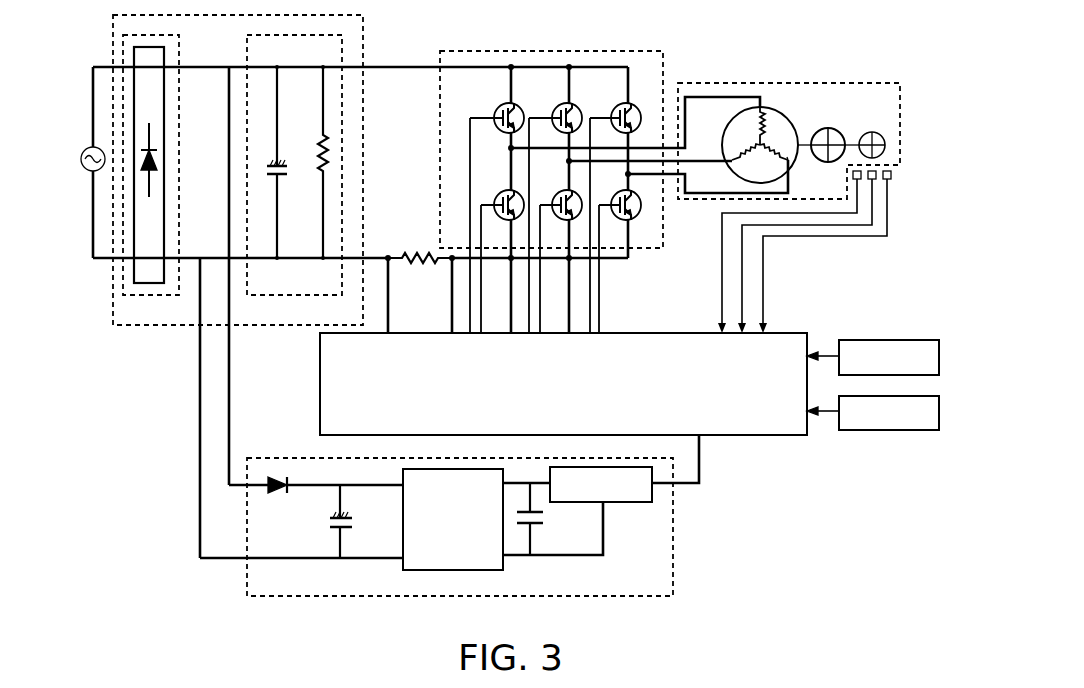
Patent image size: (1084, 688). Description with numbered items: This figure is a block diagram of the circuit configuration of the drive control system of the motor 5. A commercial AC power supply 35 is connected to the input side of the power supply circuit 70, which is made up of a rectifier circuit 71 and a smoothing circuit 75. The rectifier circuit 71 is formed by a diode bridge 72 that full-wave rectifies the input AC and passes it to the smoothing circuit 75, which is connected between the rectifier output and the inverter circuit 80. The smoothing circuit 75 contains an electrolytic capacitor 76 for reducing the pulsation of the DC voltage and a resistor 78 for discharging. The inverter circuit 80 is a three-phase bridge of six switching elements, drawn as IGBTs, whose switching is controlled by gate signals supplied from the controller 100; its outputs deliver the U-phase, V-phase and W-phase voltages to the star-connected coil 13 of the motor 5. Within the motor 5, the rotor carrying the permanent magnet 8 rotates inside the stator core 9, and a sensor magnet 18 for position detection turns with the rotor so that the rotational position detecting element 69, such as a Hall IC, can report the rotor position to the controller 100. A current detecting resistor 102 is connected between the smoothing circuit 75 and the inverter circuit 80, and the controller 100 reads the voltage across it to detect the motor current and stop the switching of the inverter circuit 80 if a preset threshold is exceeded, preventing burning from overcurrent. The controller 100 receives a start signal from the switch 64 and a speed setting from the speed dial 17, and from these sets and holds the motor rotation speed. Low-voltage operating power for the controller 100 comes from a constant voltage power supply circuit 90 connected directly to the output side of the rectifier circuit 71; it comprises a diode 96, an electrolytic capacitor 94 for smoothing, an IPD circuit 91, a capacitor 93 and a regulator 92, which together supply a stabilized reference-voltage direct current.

The commercial AC power supply 35 is at (88, 172).
The power supply circuit 70 is at (132, 326).
The rectifier circuit 71 is at (138, 296).
The diode bridge 72 is at (165, 52).
The smoothing circuit 75 is at (285, 296).
The electrolytic capacitor 76 is at (282, 178).
The resistor 78 is at (317, 136).
The inverter circuit 80 is at (663, 52).
The current detecting resistor 102 is at (420, 252).
The motor 5 is at (842, 82).
The stator core 9 is at (783, 122).
The coil 13 is at (790, 155).
The permanent magnet 8 is at (838, 129).
The sensor magnet 18 is at (878, 132).
The rotational position detecting element 69 is at (860, 180).
The controller 100 is at (786, 336).
The switch 64 is at (878, 340).
The speed dial 17 is at (880, 431).
The constant voltage power supply circuit 90 is at (674, 565).
The IPD circuit 91 is at (480, 571).
The regulator 92 is at (637, 503).
The capacitor 93 is at (537, 527).
The electrolytic capacitor 94 is at (344, 531).
The diode 96 is at (272, 497).